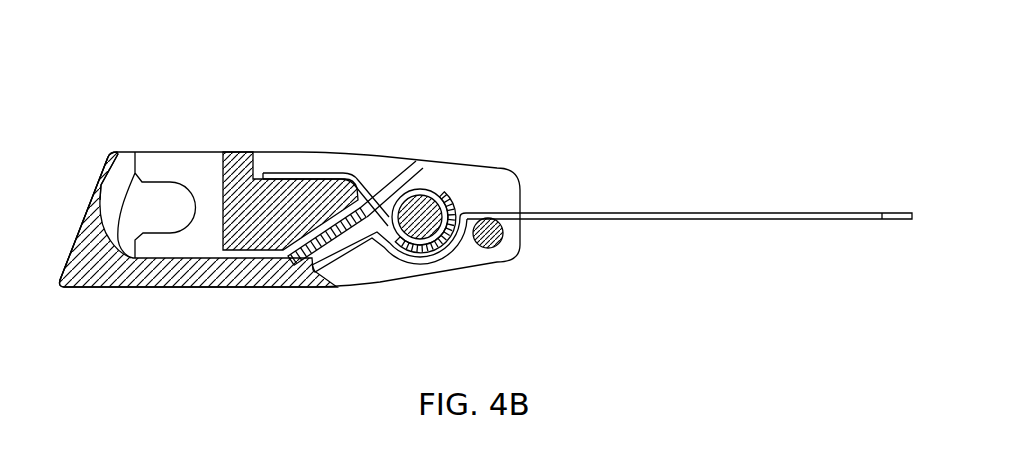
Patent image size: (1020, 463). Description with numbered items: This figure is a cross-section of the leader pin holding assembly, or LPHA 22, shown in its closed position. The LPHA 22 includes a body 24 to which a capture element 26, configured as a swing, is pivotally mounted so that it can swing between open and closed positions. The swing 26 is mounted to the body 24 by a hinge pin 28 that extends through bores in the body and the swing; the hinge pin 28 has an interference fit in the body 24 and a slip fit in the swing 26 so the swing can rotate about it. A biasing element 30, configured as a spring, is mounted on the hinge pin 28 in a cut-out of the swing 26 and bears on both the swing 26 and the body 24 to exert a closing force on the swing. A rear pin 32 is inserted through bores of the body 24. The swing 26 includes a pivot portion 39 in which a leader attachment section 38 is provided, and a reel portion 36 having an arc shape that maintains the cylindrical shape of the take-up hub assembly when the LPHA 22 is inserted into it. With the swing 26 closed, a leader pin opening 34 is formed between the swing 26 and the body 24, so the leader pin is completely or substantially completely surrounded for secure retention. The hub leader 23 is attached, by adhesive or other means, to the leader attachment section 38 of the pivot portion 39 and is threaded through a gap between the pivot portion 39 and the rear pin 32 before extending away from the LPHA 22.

The leader pin holding assembly 22 is at (406, 66).
The hub leader 23 is at (689, 212).
The body 24 is at (234, 152).
The capture element 26 is at (198, 288).
The hinge pin 28 is at (440, 196).
The biasing element 30 is at (323, 173).
The rear pin 32 is at (489, 249).
The leader pin opening 34 is at (161, 208).
The reel portion 36 is at (87, 210).
The leader attachment section 38 is at (356, 262).
The pivot portion 39 is at (449, 200).